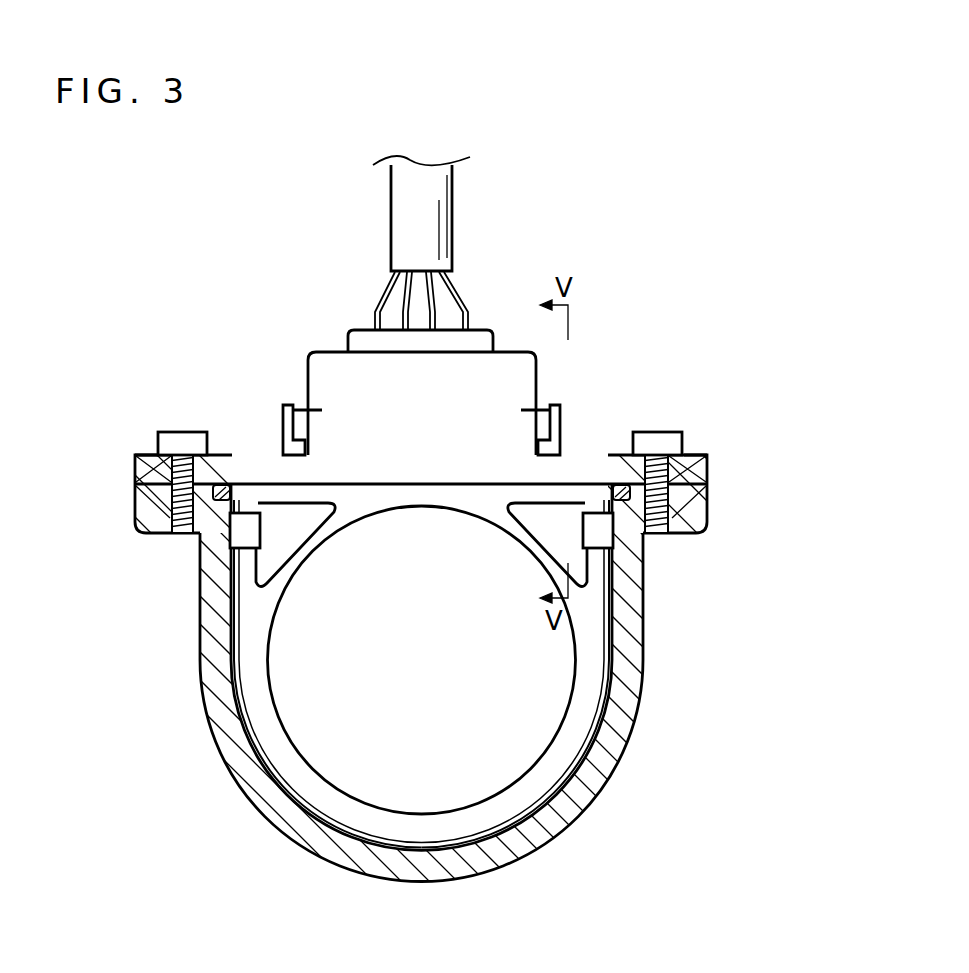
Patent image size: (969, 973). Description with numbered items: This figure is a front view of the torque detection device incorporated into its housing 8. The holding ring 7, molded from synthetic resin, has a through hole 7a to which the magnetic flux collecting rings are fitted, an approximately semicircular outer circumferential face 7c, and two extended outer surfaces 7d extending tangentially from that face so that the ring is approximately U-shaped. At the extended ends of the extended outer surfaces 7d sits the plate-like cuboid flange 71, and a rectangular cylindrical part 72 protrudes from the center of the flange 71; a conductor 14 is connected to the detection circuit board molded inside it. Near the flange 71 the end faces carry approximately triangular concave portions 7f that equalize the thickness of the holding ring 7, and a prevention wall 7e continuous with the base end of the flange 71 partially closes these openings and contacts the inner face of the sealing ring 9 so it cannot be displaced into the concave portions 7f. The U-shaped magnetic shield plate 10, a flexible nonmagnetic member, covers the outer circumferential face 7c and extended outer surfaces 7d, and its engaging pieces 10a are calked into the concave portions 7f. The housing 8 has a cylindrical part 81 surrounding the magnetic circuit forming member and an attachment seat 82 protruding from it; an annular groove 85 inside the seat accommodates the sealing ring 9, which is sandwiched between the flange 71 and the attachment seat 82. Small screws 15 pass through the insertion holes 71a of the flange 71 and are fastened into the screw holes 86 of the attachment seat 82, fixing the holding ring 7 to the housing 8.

The holding ring 7 is at (523, 800).
The through hole 7a is at (566, 696).
The outer circumferential face 7c is at (318, 817).
The extended outer surfaces 7d is at (236, 606).
The prevention wall 7e is at (272, 490).
The concave portions 7f is at (307, 520).
The housing 8 is at (617, 782).
The cylindrical part 81 is at (460, 867).
The attachment seat 82 is at (153, 478).
The annular groove 85 is at (200, 542).
The screw holes 86 is at (167, 512).
The sealing ring 9 is at (220, 488).
The magnetic shield plate 10 is at (218, 645).
The engaging pieces 10a is at (273, 520).
The conductor 14 is at (390, 288).
The small screws 15 is at (177, 437).
The flange 71 is at (152, 453).
The insertion holes 71a is at (133, 456).
The rectangular cylindrical part 72 is at (342, 373).